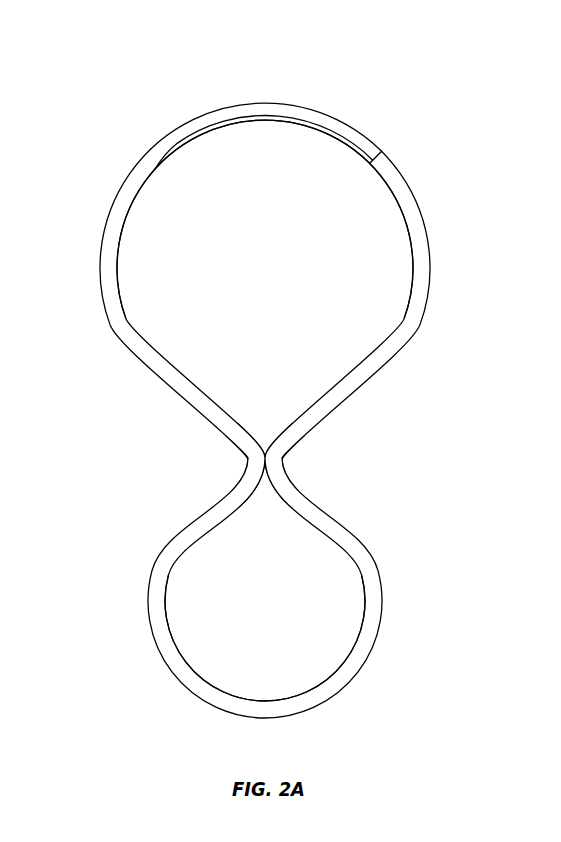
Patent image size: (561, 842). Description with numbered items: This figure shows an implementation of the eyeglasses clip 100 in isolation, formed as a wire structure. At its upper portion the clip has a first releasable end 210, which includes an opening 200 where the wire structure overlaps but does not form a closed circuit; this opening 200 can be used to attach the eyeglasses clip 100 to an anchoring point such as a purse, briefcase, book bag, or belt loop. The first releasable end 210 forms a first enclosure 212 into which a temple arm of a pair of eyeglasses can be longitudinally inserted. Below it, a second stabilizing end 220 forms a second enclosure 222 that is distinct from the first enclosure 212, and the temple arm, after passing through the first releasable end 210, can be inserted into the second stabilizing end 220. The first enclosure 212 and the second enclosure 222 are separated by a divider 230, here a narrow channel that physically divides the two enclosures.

The eyeglasses clip 100 is at (266, 371).
The opening 200 is at (292, 113).
The first releasable end 210 is at (114, 316).
The first enclosure 212 is at (363, 269).
The second stabilizing end 220 is at (380, 597).
The second enclosure 222 is at (206, 650).
The divider 230 is at (300, 462).